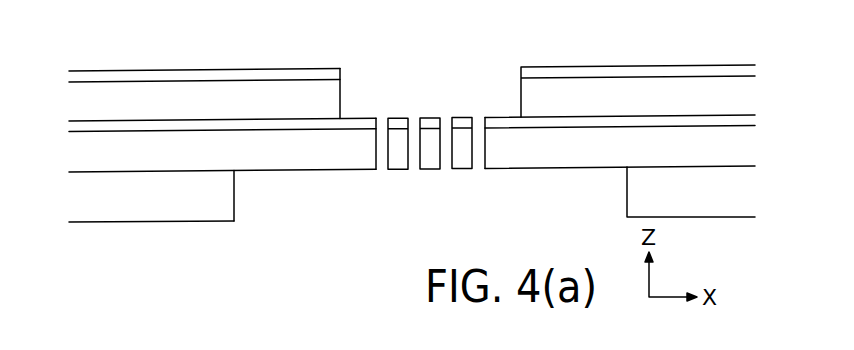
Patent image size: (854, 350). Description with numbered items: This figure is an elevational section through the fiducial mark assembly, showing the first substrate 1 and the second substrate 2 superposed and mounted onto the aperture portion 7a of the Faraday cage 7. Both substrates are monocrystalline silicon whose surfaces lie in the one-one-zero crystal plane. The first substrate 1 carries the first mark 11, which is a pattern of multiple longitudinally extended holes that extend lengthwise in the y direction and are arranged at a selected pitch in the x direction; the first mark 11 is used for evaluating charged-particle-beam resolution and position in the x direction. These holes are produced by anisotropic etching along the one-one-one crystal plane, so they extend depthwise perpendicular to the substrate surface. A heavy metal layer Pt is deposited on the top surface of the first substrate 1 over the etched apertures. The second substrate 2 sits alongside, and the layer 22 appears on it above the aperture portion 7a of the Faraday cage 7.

The first substrate 1 is at (523, 152).
The second substrate 2 is at (596, 91).
The Faraday cage 7 is at (140, 218).
The aperture portion 7a is at (236, 198).
The first mark 11 is at (480, 183).
The piezoelectric layer 22 is at (341, 93).
The heavy metal layer Pt is at (152, 125).